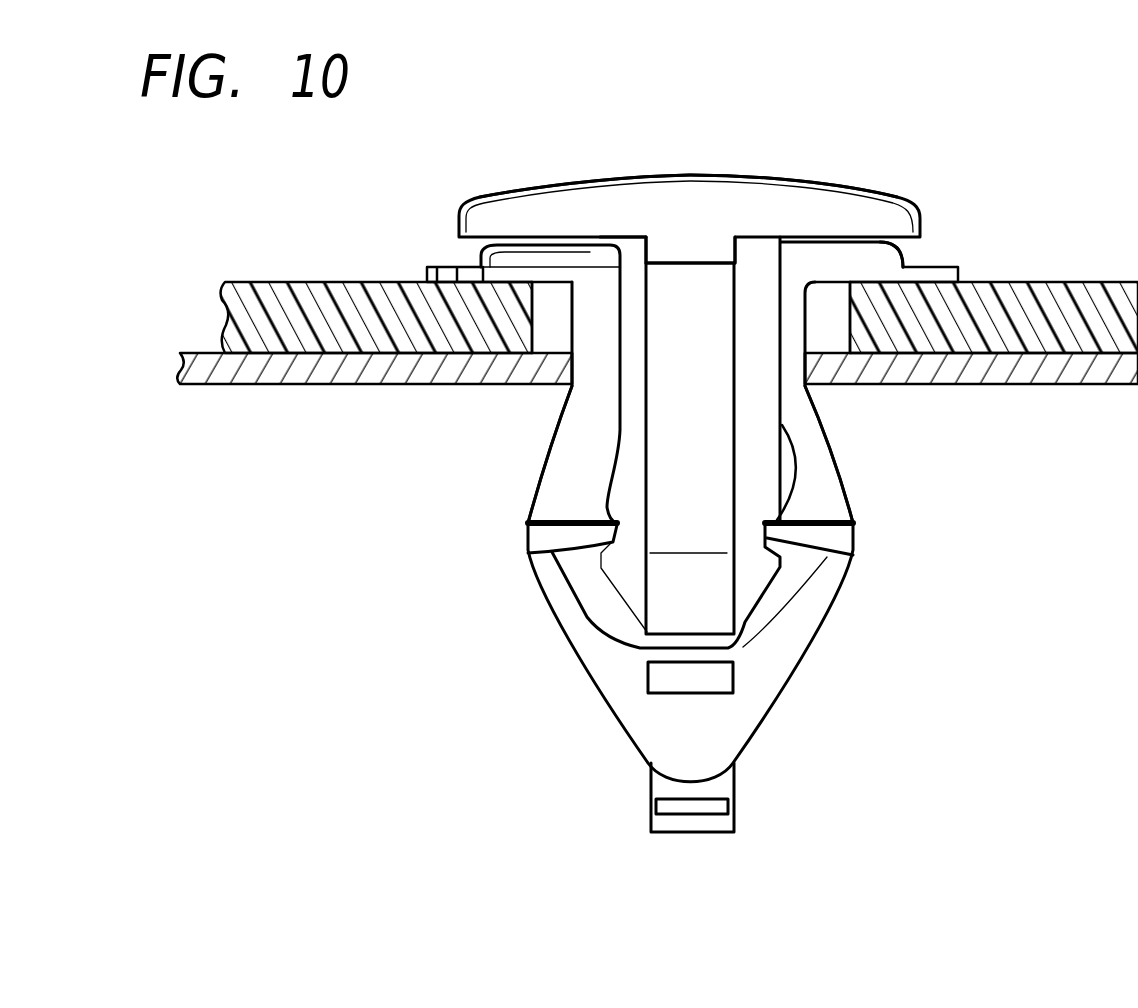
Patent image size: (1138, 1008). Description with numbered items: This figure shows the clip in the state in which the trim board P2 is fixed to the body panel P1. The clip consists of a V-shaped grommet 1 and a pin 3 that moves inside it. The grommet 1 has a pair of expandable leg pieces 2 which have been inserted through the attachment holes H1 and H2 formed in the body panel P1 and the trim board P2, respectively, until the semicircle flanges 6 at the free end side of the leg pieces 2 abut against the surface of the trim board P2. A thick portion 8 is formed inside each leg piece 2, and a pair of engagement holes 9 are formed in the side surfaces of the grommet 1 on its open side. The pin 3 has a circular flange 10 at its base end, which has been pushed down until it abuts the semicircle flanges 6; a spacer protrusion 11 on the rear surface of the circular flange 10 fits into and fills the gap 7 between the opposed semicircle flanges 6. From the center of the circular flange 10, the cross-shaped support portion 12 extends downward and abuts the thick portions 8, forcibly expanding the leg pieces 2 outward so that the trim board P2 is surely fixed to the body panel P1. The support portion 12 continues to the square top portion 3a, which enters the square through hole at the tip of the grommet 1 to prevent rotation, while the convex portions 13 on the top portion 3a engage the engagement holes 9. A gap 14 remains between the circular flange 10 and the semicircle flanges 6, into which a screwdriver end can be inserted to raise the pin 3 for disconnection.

The grommet 1 is at (627, 697).
The leg pieces 2 is at (572, 458).
The pin 3 is at (590, 196).
The top portion 3a is at (723, 788).
The semicircle flanges 6 is at (447, 273).
The gap 7 is at (634, 282).
The thick portion 8 is at (610, 530).
The engagement holes 9 is at (713, 678).
The circular flange 10 is at (658, 200).
The spacer protrusion 11 is at (713, 245).
The support portion 12 is at (713, 468).
The convex portions 13 is at (682, 808).
The gap 14 is at (915, 253).
The body panel P1 is at (305, 370).
The trim board P2 is at (275, 302).
The attachment hole H1 is at (553, 393).
The attachment hole H2 is at (838, 332).